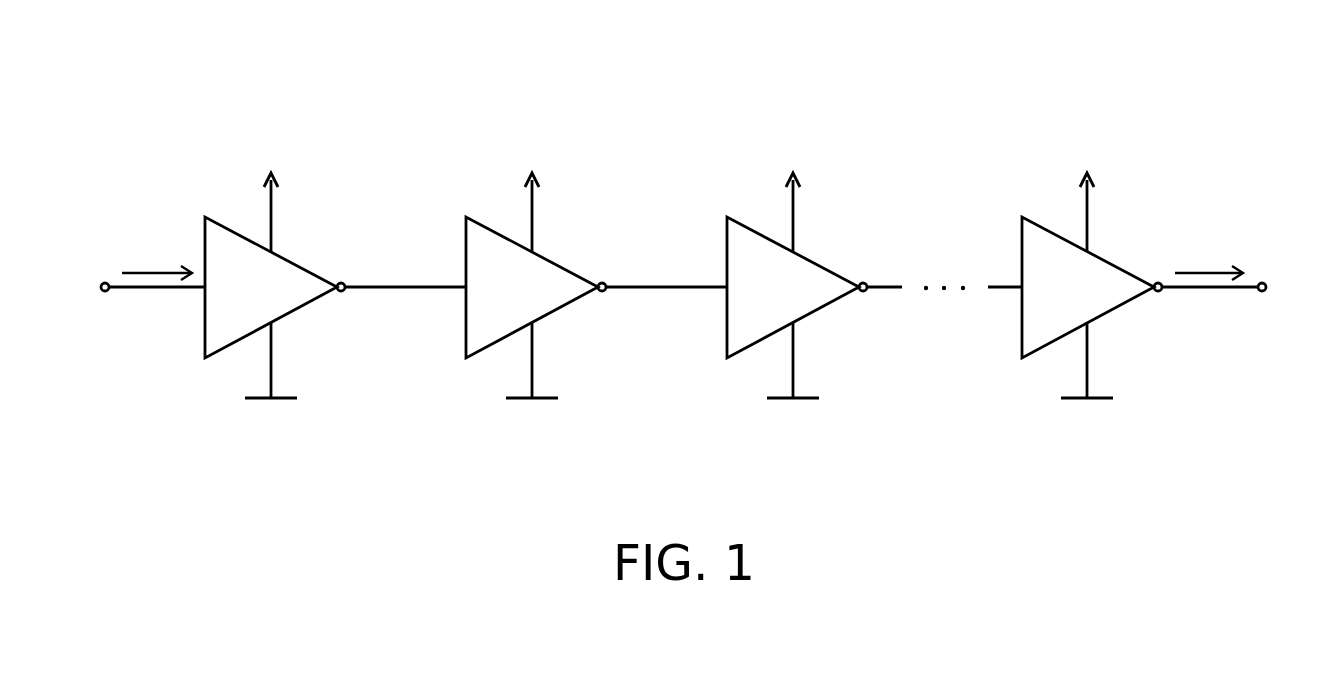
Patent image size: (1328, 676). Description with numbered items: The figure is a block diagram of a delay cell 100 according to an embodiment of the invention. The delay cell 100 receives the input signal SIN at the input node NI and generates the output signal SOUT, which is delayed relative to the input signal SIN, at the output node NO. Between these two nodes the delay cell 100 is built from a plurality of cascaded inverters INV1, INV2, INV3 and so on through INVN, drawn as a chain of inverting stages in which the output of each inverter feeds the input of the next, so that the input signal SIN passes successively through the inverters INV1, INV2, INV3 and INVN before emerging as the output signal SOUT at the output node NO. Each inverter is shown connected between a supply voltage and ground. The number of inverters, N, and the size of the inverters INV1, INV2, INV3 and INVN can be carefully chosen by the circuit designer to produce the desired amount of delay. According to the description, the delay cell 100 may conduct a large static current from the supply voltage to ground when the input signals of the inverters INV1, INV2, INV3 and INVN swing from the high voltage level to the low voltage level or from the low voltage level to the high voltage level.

The delay cell 100 is at (613, 49).
The first inverter INV1 is at (275, 289).
The second inverter INV2 is at (536, 289).
The third inverter INV3 is at (797, 289).
The N-th inverter INVN is at (1092, 289).
The input node NI is at (105, 292).
The output node NO is at (1262, 292).
The input signal SIN is at (157, 257).
The output signal SOUT is at (1211, 257).